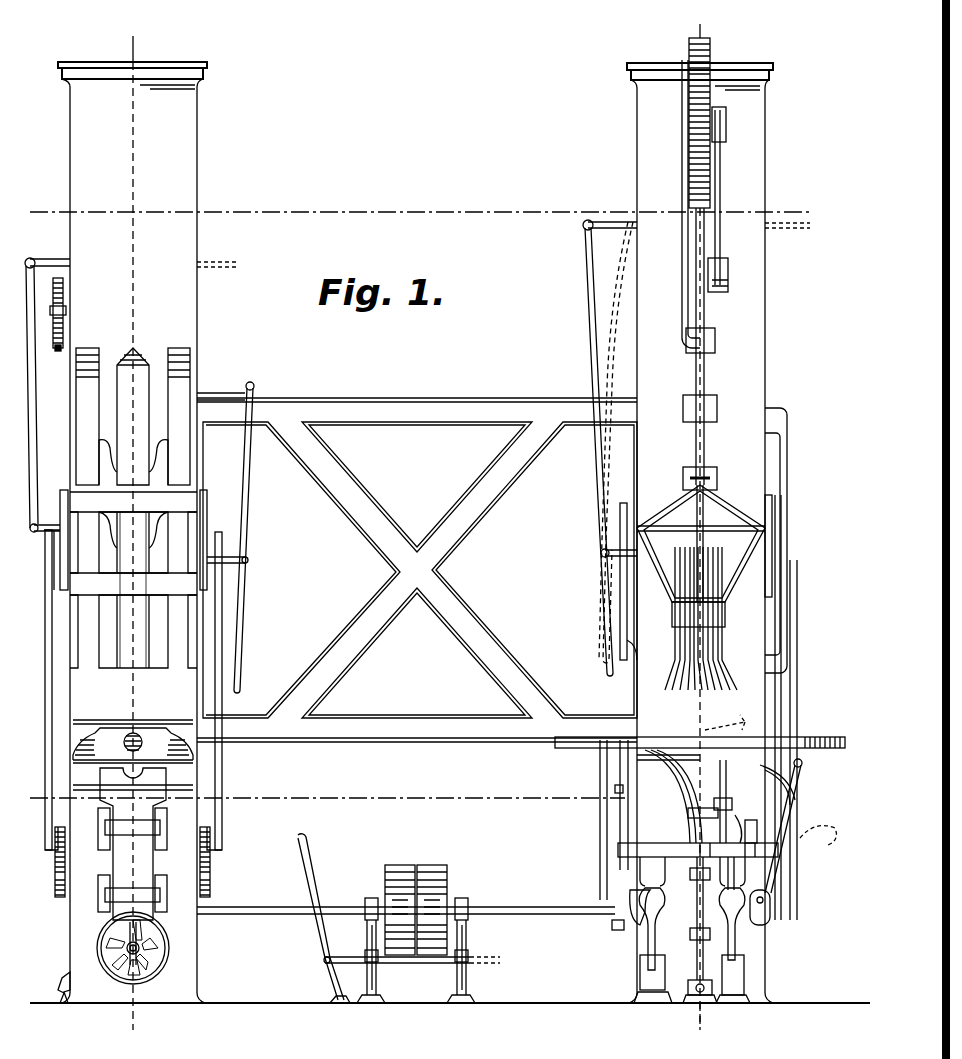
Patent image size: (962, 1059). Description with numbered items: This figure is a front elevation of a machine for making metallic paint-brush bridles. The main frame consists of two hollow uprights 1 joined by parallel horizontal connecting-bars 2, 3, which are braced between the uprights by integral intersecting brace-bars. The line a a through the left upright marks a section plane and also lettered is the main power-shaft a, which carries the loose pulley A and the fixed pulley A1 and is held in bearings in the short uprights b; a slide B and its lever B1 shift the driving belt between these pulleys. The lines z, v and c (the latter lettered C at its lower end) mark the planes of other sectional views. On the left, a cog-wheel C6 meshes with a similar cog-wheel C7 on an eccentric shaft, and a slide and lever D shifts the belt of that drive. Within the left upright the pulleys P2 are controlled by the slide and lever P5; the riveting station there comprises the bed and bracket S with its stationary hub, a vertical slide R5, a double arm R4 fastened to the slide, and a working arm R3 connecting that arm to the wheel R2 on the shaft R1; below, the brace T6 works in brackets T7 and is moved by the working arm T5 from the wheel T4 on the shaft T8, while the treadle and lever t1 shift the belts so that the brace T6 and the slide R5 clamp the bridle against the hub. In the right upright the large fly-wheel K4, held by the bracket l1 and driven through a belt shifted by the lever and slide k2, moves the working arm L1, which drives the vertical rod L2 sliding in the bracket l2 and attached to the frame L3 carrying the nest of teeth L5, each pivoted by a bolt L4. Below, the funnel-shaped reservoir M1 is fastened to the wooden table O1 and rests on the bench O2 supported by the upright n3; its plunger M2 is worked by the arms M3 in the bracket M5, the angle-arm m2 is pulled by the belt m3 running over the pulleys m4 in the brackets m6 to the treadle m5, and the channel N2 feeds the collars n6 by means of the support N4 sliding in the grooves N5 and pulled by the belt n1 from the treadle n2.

The hollow uprights 1 is at (637, 106).
The parallel horizontal connecting-bar 2 is at (417, 558).
The parallel horizontal connecting-bar 3 is at (417, 665).
The main power-shaft a is at (370, 532).
The section line c c is at (699, 517).
The axis line C is at (699, 1026).
The section line z z is at (413, 234).
The section line v v is at (321, 797).
The cog-wheel C6 is at (58, 278).
The cog-wheel C7 is at (58, 350).
The slide and lever D is at (50, 407).
The slide and lever P5 is at (222, 396).
The pulleys P2 is at (133, 508).
The vertical slide R5 is at (133, 541).
The double arm R4 is at (60, 495).
The working arm R3 is at (255, 636).
The axle or shaft R1 is at (55, 860).
The wheel R2 is at (55, 886).
The combination bed and bracket S is at (133, 754).
The brace T6 is at (132, 844).
The brackets T7 is at (158, 895).
The wheel T4 is at (153, 975).
The working arm T5 is at (150, 940).
The shaft T8 is at (118, 946).
The treadle and lever t1 is at (58, 985).
The fixed pulley A1 is at (398, 875).
The loose pulley A is at (436, 875).
The slide B is at (412, 971).
The short uprights b is at (372, 985).
The lever B1 is at (318, 928).
The fly-wheel K4 is at (718, 119).
The working arm L1 is at (682, 170).
The bracket l1 is at (718, 222).
The vertical rod L2 is at (705, 380).
The bracket l2 is at (690, 470).
The frame L3 is at (728, 500).
The metal teeth L5 is at (680, 565).
The bolt or pivot L4 is at (722, 605).
The lever and slide k2 is at (598, 448).
The wooden table O1 is at (563, 750).
The grooves N5 is at (725, 758).
The funnel-shaped reservoir M1 is at (669, 796).
The wooden bench or table O2 is at (618, 848).
The metal tube or channel N2 is at (688, 820).
The vertical metal support or slide N4 is at (740, 783).
The leather belt m3 is at (795, 790).
The angle-arm m2 is at (770, 818).
The brackets m6 is at (640, 872).
The pulleys m4 is at (636, 893).
The treadle m5 is at (650, 940).
The metal core or plunger M2 is at (697, 875).
The working arms M3 is at (697, 895).
The bracket M5 is at (697, 930).
The metal rings or collars n6 is at (770, 868).
The leather belt n1 is at (735, 880).
The treadle n2 is at (740, 935).
The upright n3 is at (740, 988).